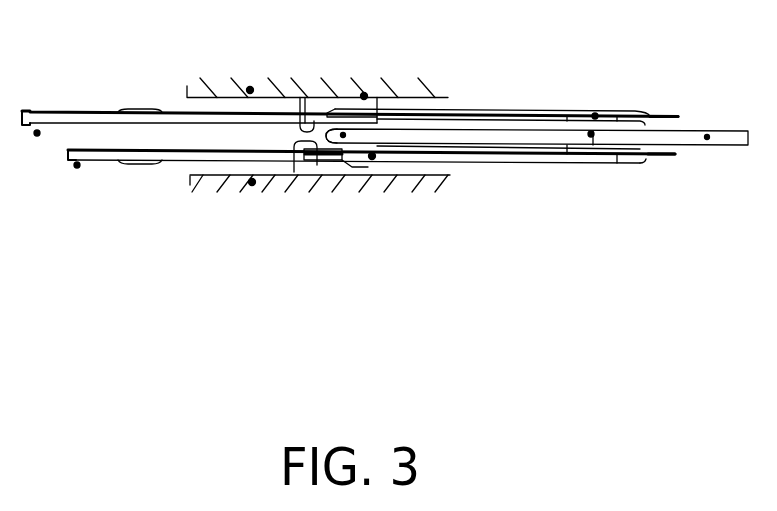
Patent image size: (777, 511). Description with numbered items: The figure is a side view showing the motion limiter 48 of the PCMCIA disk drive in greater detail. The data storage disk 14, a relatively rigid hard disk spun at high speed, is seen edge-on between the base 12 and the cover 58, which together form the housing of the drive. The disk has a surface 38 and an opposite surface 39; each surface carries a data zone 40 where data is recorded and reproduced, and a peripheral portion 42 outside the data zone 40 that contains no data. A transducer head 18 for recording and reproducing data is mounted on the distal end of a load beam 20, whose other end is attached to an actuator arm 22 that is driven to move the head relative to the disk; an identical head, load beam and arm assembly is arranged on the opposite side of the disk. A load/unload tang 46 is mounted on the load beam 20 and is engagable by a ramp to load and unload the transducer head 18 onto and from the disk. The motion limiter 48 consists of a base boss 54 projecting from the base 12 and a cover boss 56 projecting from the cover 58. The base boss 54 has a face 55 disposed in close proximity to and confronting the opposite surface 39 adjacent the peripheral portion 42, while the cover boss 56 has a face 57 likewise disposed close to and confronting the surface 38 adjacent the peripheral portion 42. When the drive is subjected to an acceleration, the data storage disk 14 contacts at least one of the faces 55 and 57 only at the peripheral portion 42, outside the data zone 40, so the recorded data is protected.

The base 12 is at (252, 182).
The data storage disk 14 is at (707, 137).
The transducer head 18 is at (595, 116).
The load beam 20 is at (465, 109).
The actuator arm 22 is at (37, 133).
The surface 38 is at (505, 118).
The opposite surface 39 is at (552, 152).
The data zone 40 is at (591, 134).
The peripheral portion 42 is at (343, 135).
The load/unload tang 46 is at (657, 115).
The motion limiter 48 is at (372, 156).
The base boss 54 is at (368, 167).
The face 55 is at (303, 175).
The cover boss 56 is at (364, 96).
The face 57 is at (302, 97).
The cover 58 is at (250, 90).